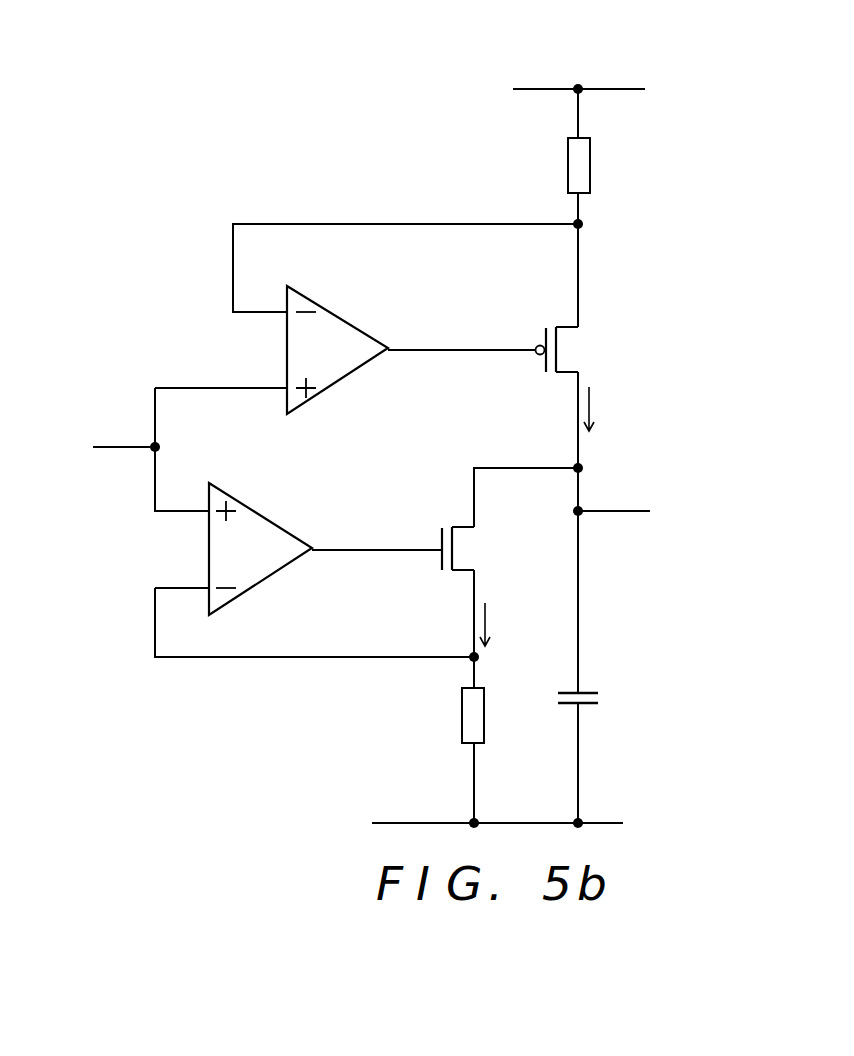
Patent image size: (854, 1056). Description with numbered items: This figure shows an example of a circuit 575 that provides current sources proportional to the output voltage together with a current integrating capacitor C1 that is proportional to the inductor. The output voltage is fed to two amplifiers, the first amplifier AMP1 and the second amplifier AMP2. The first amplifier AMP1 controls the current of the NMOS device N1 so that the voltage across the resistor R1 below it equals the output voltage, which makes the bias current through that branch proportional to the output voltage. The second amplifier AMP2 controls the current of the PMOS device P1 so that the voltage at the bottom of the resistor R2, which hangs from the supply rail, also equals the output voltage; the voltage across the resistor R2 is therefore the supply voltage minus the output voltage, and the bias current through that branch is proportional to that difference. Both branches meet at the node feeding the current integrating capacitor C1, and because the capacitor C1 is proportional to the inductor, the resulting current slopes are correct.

The circuit 575 is at (350, 55).
The resistor R1 is at (458, 715).
The resistor R2 is at (563, 156).
The current integrating capacitor C1 is at (587, 686).
The PMOS device P1 is at (560, 349).
The NMOS device N1 is at (465, 548).
The first amplifier AMP1 is at (260, 549).
The second amplifier AMP2 is at (337, 350).